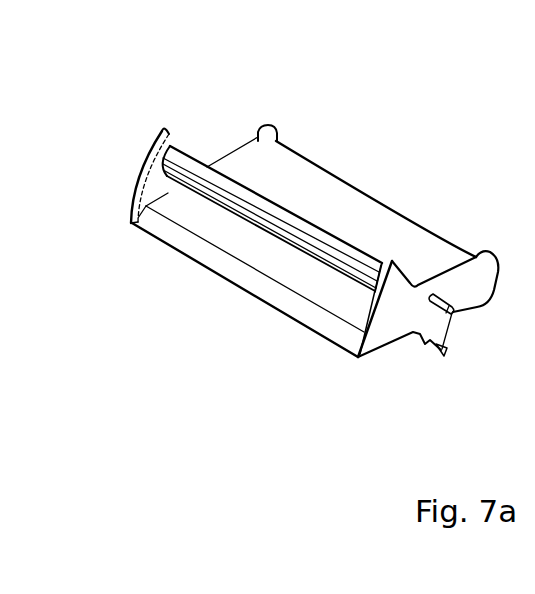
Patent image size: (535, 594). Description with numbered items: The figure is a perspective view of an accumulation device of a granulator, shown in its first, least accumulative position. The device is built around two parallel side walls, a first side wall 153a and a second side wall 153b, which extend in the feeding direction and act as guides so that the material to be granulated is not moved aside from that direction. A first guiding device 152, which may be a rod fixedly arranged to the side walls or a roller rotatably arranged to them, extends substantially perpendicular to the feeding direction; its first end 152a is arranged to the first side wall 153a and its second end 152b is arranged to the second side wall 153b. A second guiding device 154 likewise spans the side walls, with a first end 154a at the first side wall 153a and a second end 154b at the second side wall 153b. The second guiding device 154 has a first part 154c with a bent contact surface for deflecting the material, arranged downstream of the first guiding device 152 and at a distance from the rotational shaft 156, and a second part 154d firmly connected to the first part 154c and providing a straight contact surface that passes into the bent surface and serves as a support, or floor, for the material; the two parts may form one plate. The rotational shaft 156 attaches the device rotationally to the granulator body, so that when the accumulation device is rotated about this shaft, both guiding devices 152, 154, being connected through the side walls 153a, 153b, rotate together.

The first guiding device 152 is at (265, 222).
The first end of the first guiding device 152a is at (192, 165).
The second end of the first guiding device 152b is at (353, 270).
The first side wall 153a is at (152, 185).
The second side wall 153b is at (382, 317).
The second guiding device 154 is at (332, 195).
The first end of the second guiding device 154a is at (237, 168).
The second end of the second guiding device 154b is at (420, 280).
The first part of the second guiding device 154c is at (380, 207).
The second part of the second guiding device 154d is at (277, 270).
The rotational shaft 156 is at (452, 312).